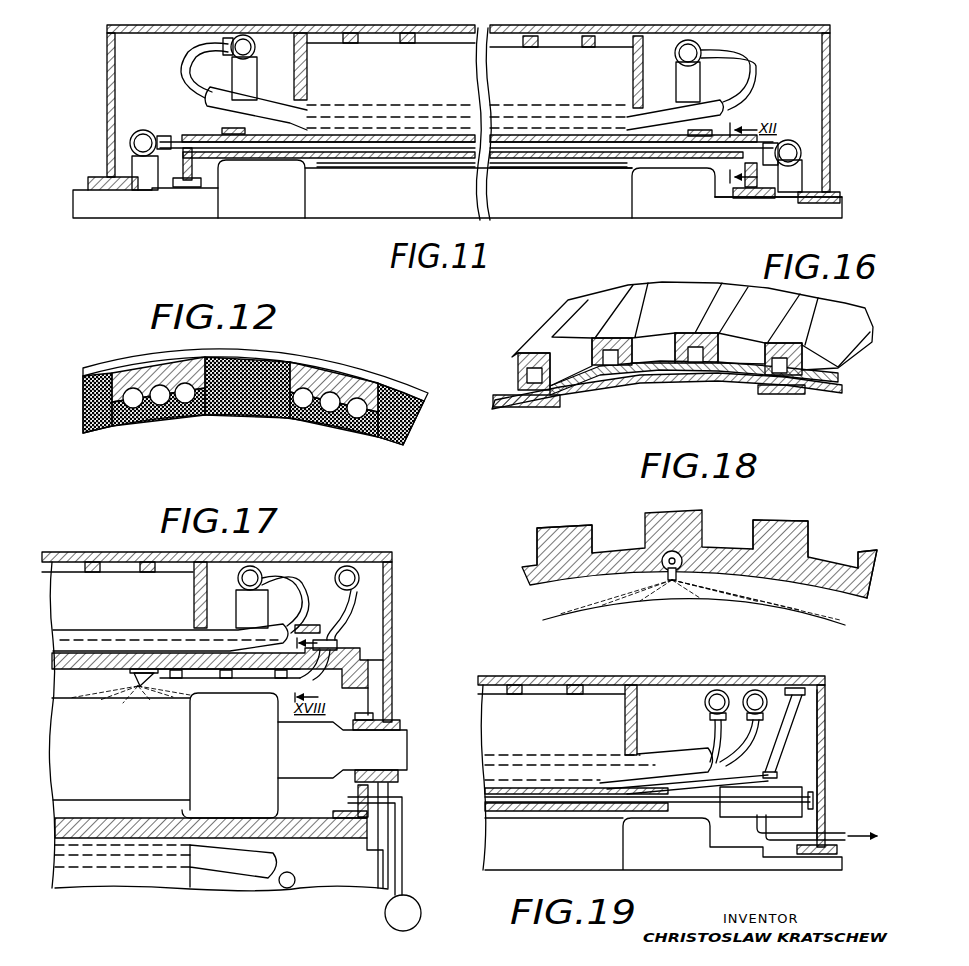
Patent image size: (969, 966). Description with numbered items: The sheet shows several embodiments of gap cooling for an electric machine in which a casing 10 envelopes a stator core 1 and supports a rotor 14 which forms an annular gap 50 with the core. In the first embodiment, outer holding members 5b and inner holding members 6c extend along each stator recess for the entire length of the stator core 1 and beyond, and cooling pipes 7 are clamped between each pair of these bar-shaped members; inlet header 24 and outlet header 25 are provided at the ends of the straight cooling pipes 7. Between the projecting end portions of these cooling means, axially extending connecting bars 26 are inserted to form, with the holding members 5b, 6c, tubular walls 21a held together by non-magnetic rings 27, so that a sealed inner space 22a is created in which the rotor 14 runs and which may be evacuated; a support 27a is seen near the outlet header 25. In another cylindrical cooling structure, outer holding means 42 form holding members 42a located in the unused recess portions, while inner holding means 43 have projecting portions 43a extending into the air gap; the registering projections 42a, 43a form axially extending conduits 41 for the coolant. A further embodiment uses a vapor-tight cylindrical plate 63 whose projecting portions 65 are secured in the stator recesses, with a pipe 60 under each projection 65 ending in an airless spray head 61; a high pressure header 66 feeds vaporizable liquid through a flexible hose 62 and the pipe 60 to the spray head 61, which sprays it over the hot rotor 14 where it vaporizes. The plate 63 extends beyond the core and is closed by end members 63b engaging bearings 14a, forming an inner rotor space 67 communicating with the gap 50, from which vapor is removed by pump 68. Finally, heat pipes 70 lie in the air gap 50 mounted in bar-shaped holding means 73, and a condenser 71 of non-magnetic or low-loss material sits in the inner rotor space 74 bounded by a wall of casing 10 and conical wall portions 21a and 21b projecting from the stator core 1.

In FIG. 11, the stator core 1 is at (380, 72).
In FIG. 17, the stator core 1 is at (120, 600).
In FIG. 19, the stator core 1 is at (575, 721).
In FIG. 11, the outer holding member 5b is at (397, 135).
In FIG. 12, the outer holding member 5b is at (345, 385).
In FIG. 11, the inner holding member 6c is at (455, 158).
In FIG. 12, the inner holding member 6c is at (160, 415).
In FIG. 11, the cooling pipes 7 is at (337, 148).
In FIG. 12, the cooling pipes 7 is at (355, 420).
In FIG. 11, the casing 10 is at (107, 75).
In FIG. 19, the casing 10 is at (705, 665).
In FIG. 11, the rotor 14 is at (742, 212).
In FIG. 17, the rotor 14 is at (60, 745).
In FIG. 18, the rotor 14 is at (822, 622).
In FIG. 17, the bearings 14a is at (405, 748).
In FIG. 11, the tubular wall 21a is at (733, 118).
In FIG. 12, the tubular wall 21a is at (397, 400).
In FIG. 19, the tubular wall 21a is at (790, 712).
In FIG. 19, the conical wall portion 21b is at (740, 782).
In FIG. 11, the inner space 22a is at (213, 182).
In FIG. 11, the inlet header 24 is at (805, 150).
In FIG. 11, the outlet header 25 is at (148, 130).
In FIG. 12, the connecting bars 26 is at (270, 373).
In FIG. 11, the rings 27 is at (222, 130).
In FIG. 12, the rings 27 is at (110, 375).
In FIG. 11, the support 27a is at (175, 170).
In FIG. 16, the conduits 41 is at (705, 362).
In FIG. 16, the outer holding means 42 is at (845, 365).
In FIG. 16, the holding members 42a is at (540, 350).
In FIG. 16, the inner holding means 43 is at (805, 395).
In FIG. 16, the projecting portions 43a is at (535, 406).
In FIG. 11, the annular gap 50 is at (548, 170).
In FIG. 17, the annular gap 50 is at (63, 688).
In FIG. 18, the annular gap 50 is at (560, 615).
In FIG. 19, the annular gap 50 is at (485, 815).
In FIG. 17, the pipe 60 is at (250, 678).
In FIG. 18, the pipe 60 is at (688, 565).
In FIG. 18, the airless spray head 61 is at (690, 555).
In FIG. 17, the flexible hose 62 is at (348, 608).
In FIG. 17, the cylindrical plate 63 is at (62, 663).
In FIG. 18, the cylindrical plate 63 is at (820, 570).
In FIG. 17, the end members 63b is at (385, 719).
In FIG. 18, the projecting portions 65 is at (566, 533).
In FIG. 17, the high pressure header 66 is at (360, 552).
In FIG. 17, the inner rotor space 67 is at (347, 698).
In FIG. 17, the pump 68 is at (385, 914).
In FIG. 19, the heat pipes 70 is at (508, 798).
In FIG. 19, the condenser 71 is at (787, 790).
In FIG. 19, the bar-shaped holding means 73 is at (567, 812).
In FIG. 19, the inner rotor space 74 is at (800, 747).